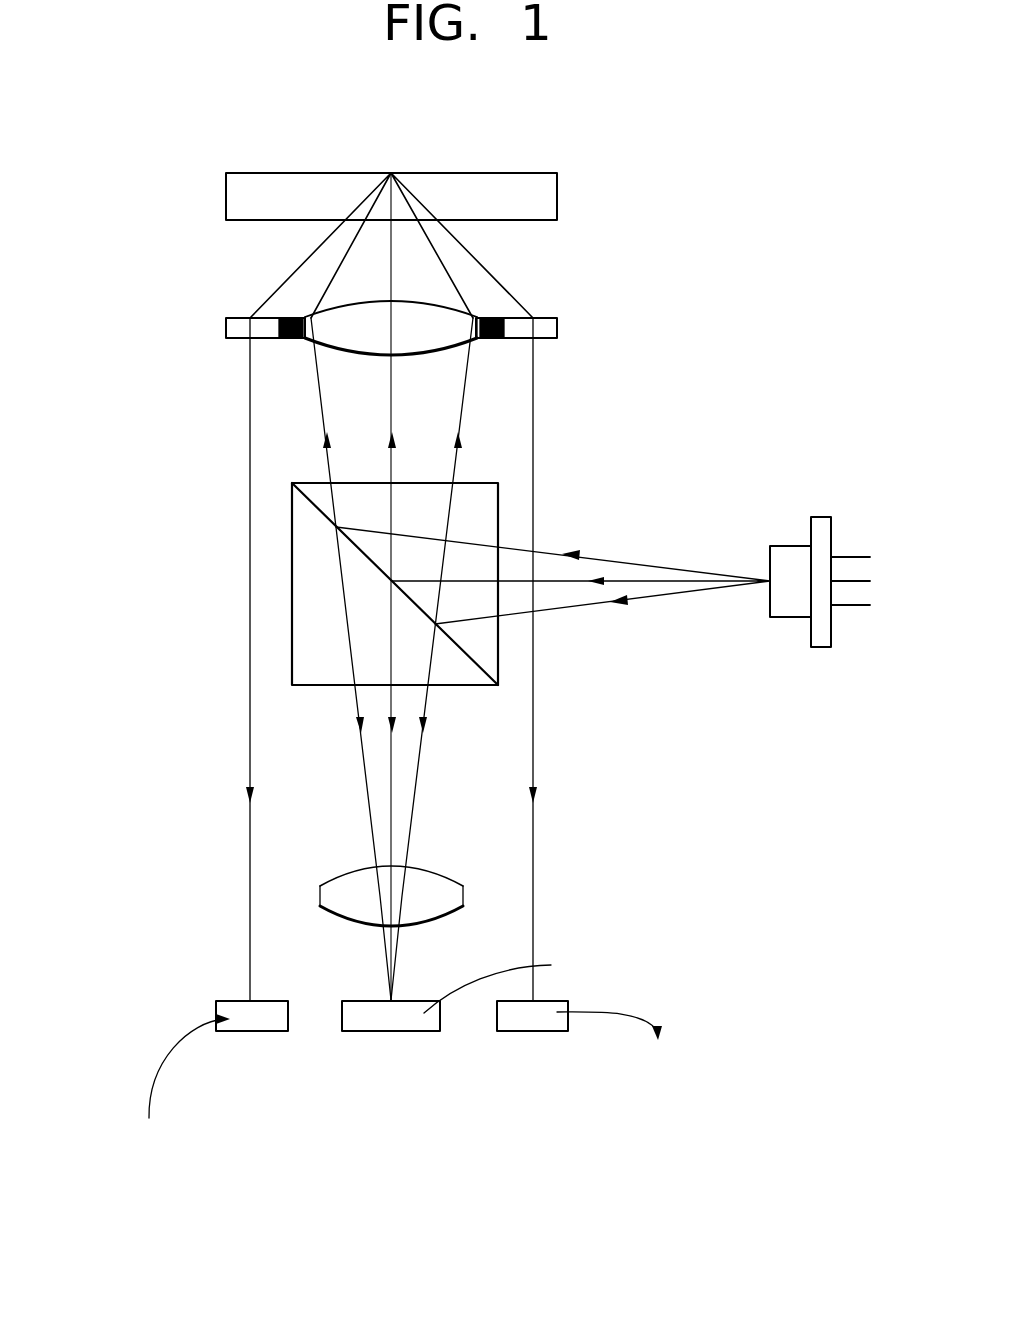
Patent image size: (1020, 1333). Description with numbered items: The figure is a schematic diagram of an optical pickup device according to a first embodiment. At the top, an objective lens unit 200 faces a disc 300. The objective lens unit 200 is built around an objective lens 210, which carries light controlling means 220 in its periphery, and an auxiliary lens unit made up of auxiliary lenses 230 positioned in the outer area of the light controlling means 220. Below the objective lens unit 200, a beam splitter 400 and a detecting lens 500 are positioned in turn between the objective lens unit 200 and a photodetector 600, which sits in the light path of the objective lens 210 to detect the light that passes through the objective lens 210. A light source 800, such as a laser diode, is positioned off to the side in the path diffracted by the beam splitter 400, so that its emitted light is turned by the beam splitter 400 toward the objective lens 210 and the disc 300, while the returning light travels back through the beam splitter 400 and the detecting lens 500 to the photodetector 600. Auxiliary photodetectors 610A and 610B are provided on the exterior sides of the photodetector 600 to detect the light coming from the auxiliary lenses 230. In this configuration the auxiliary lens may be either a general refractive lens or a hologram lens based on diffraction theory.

The objective lens unit 200 is at (572, 331).
The objective lens 210 is at (427, 360).
The light controlling means 220 is at (489, 340).
The auxiliary lenses 230 is at (238, 318).
The disc 300 is at (557, 193).
The beam splitter 400 is at (292, 509).
The detecting lens 500 is at (437, 873).
The photodetector 600 is at (407, 1034).
The auxiliary photodetector 610A is at (248, 1034).
The auxiliary photodetector 610B is at (535, 1035).
The light source 800 is at (797, 546).